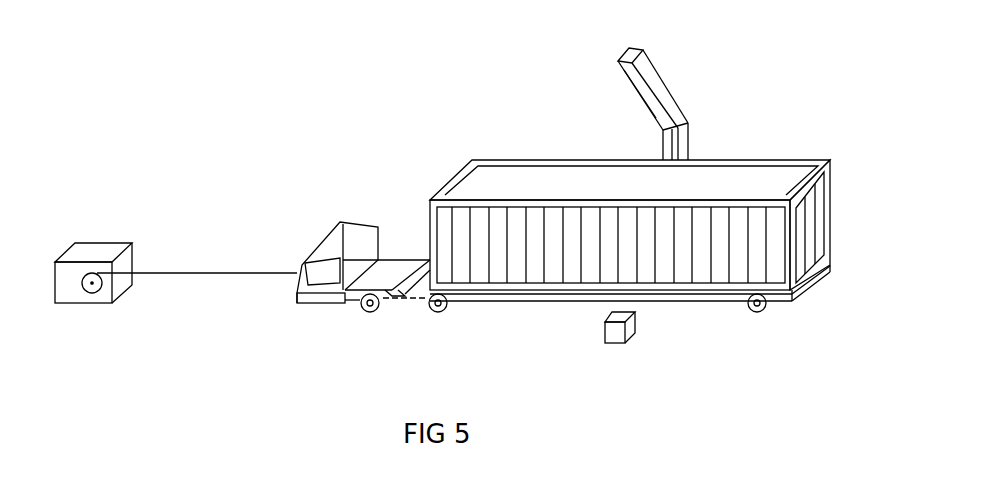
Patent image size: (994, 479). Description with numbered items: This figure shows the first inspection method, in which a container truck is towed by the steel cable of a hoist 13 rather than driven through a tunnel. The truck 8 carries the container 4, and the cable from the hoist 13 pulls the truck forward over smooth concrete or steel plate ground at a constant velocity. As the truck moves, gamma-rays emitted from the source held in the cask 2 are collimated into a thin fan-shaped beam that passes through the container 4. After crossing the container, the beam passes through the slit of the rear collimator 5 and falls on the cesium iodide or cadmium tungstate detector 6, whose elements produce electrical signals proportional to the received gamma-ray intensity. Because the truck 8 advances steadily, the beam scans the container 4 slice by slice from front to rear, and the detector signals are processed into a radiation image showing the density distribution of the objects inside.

The cask 2 is at (627, 330).
The container 4 is at (630, 230).
The rear collimator 5 is at (616, 63).
The cesium iodide or cadmium tungstate detector 6 is at (657, 83).
The truck 8 is at (406, 265).
The hoist 13 is at (73, 297).